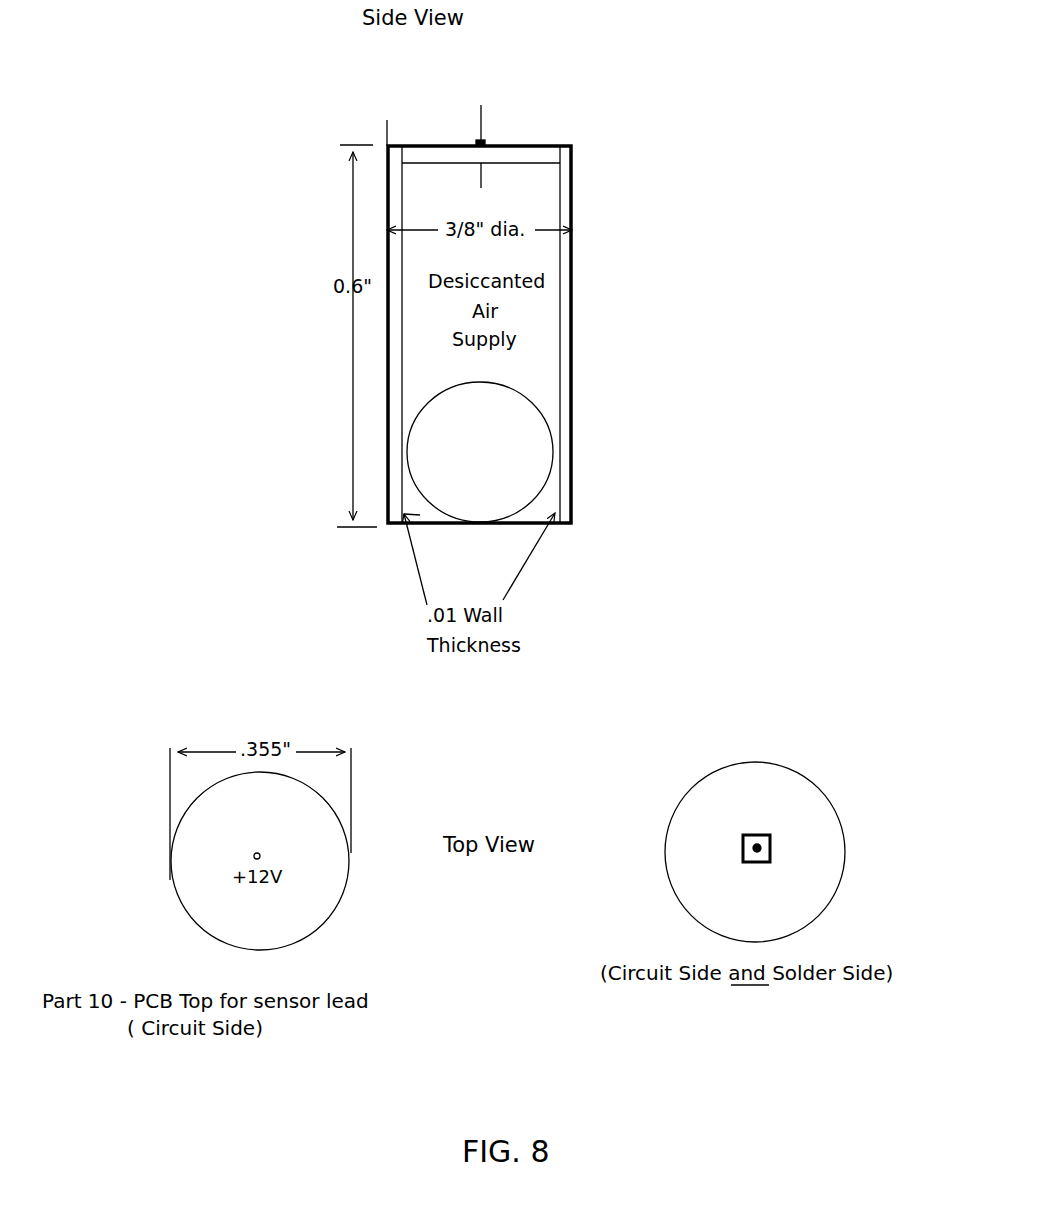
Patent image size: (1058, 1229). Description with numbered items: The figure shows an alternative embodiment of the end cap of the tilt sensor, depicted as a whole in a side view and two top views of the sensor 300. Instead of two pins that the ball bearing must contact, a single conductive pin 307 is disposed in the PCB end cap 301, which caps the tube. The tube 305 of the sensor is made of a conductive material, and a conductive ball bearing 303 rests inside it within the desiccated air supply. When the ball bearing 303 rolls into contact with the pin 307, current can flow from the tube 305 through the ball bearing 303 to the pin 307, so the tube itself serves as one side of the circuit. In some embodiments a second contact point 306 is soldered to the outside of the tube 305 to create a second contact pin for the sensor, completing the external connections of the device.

The sensor assembly 300 is at (560, 262).
The PCB end cap 301 is at (532, 162).
The conductive ball bearing 303 is at (480, 450).
The conductive tube 305 is at (565, 192).
The second contact point 306 is at (378, 127).
The conductive pin 307 is at (477, 98).